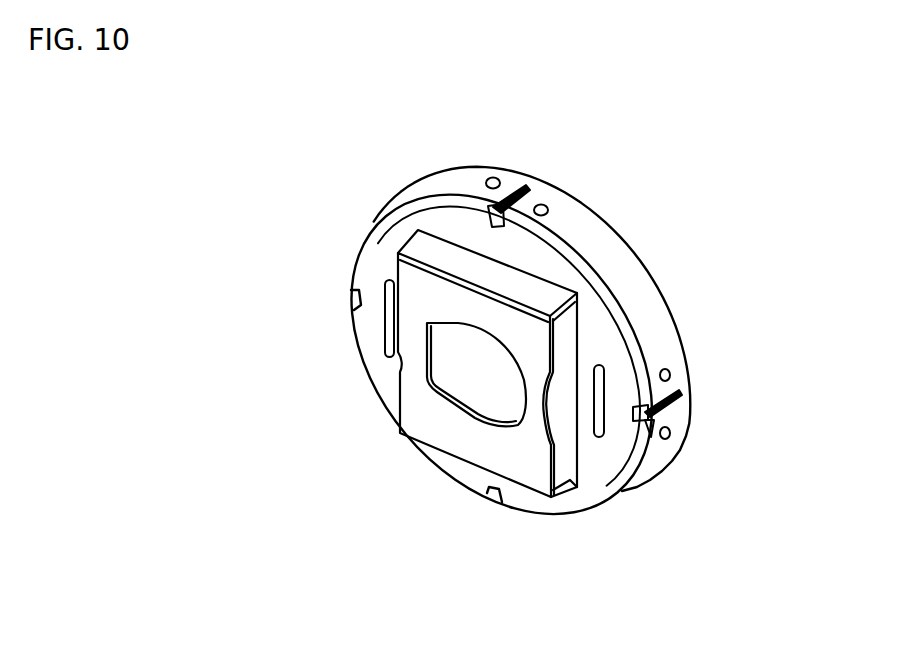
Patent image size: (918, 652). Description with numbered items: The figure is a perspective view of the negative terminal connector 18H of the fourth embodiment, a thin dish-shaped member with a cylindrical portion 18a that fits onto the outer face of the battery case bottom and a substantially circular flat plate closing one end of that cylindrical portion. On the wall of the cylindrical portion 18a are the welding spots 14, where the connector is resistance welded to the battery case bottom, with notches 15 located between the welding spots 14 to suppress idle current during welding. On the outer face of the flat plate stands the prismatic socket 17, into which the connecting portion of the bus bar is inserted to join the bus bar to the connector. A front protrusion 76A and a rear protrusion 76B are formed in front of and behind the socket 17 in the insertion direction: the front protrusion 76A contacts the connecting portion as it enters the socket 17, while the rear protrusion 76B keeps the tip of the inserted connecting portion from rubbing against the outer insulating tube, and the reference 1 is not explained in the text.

The front face of mounting ring 1 is at (599, 480).
The welding spots 14 is at (543, 206).
The notches 15 is at (492, 207).
The prismatic socket 17 is at (467, 452).
The negative terminal connector 18H is at (662, 250).
The cylindrical portion 18a is at (653, 336).
The front protrusion 76A is at (385, 318).
The rear protrusion 76B is at (604, 430).